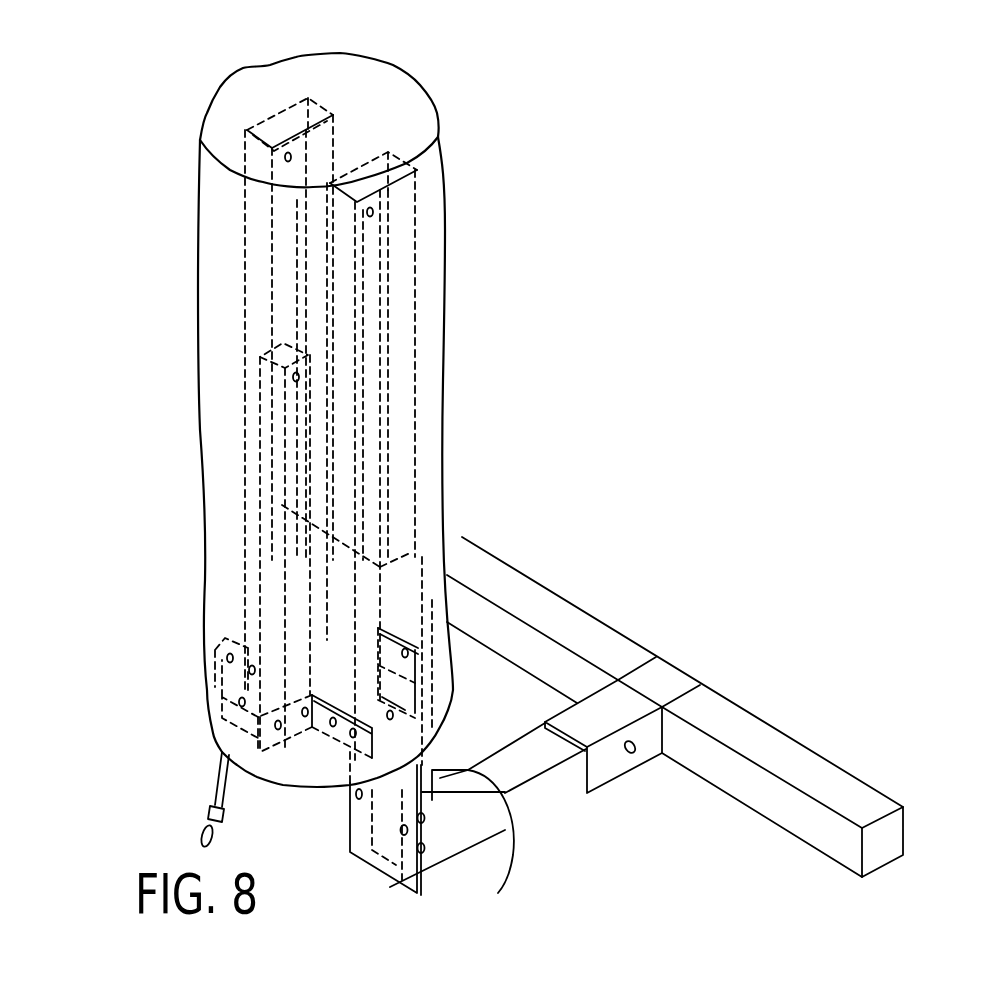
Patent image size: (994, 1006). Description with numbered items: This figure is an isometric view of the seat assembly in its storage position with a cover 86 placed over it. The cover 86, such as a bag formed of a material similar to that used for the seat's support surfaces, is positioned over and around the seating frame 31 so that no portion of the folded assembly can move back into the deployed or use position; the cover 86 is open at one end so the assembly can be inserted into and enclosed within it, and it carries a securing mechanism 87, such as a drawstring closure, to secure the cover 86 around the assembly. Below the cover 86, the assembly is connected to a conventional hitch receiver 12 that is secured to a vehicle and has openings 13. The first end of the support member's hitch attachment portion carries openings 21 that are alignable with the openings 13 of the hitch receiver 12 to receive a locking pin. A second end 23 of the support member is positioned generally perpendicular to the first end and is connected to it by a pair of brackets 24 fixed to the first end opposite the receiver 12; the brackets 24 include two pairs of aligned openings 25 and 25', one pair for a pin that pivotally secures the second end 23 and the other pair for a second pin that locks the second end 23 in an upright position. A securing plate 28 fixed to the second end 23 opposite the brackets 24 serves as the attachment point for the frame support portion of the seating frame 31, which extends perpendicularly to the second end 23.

The cover 86 is at (433, 93).
The seating frame 31 is at (233, 365).
The securing mechanism 87 is at (213, 810).
The hitch receiver 12 is at (713, 693).
The openings 13 is at (633, 741).
The openings 21 is at (552, 797).
The second end 23 is at (428, 768).
The brackets 24 is at (503, 853).
The securing plate 28 is at (350, 855).
The openings 25 is at (446, 902).
The openings 25' is at (384, 911).